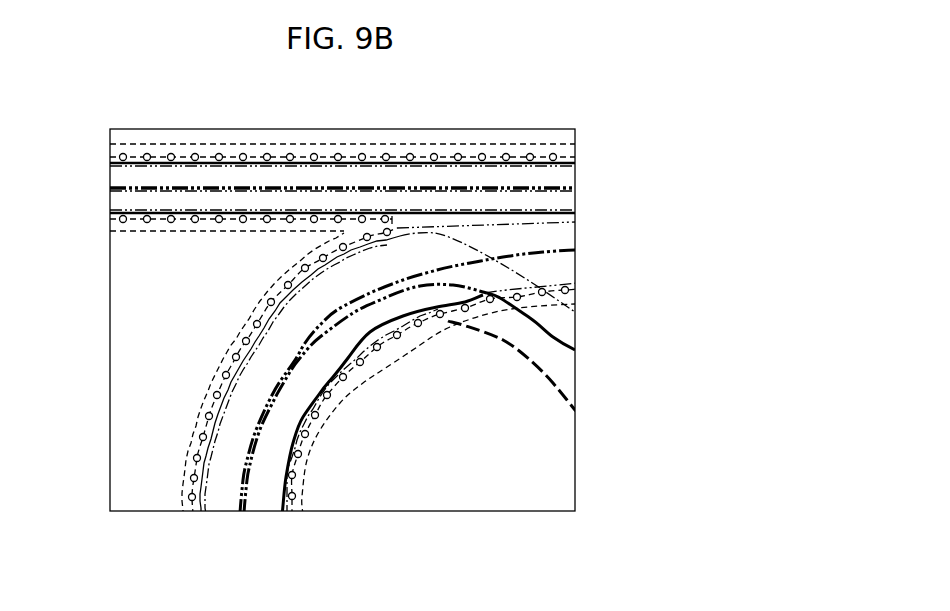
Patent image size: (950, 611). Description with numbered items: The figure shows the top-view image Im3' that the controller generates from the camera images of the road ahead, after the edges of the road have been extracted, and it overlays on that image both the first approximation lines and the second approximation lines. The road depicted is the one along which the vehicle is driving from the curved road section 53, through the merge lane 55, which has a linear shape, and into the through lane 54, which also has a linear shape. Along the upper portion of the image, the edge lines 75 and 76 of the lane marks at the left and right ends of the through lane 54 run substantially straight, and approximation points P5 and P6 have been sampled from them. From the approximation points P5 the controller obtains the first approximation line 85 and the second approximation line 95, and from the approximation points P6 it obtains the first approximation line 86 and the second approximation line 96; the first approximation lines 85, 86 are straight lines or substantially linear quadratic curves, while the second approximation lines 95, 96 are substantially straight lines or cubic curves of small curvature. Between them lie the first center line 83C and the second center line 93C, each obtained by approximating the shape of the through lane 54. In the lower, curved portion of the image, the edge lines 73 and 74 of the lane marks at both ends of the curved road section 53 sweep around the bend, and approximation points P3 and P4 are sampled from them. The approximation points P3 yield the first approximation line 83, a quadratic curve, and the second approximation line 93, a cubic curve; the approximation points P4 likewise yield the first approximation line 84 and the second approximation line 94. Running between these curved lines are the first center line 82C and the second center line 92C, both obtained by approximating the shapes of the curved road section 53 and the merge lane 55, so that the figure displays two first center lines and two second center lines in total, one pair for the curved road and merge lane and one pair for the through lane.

The top-view image Im3' is at (349, 291).
The first approximation line 85 is at (126, 164).
The through lane 54 is at (182, 176).
The approximation points P5 is at (243, 154).
The edge line 75 is at (303, 150).
The second center line 93C is at (353, 186).
The first center line 83C is at (421, 190).
The second approximation line 95 is at (127, 164).
The second approximation line 96 is at (124, 213).
The edge line 76 is at (110, 228).
The first approximation line 86 is at (135, 222).
The approximation points P6 is at (170, 222).
The edge line 73 is at (184, 472).
The second approximation line 93 is at (190, 497).
The first approximation line 83 is at (207, 480).
The approximation points P3 is at (215, 394).
The second approximation line 94 is at (478, 296).
The second center line 92C is at (547, 252).
The curved road section 53 is at (272, 497).
The first center line 82C is at (557, 331).
The approximation points P4 is at (328, 395).
The merge lane 55 is at (557, 273).
The edge line 74 is at (350, 368).
The first approximation line 84 is at (558, 390).